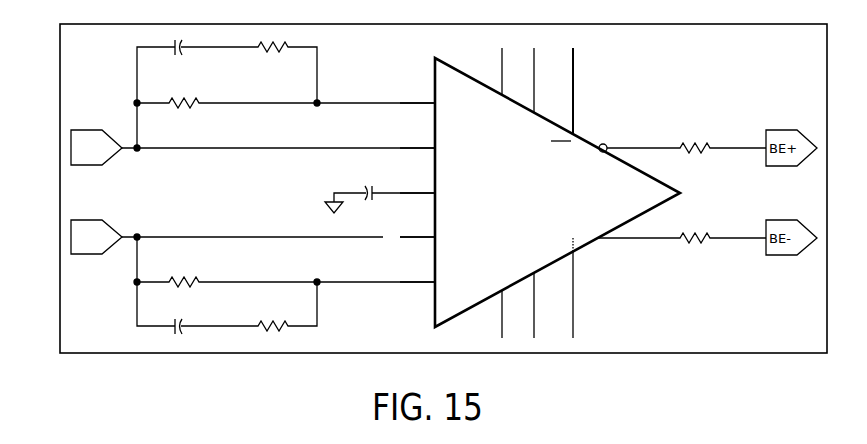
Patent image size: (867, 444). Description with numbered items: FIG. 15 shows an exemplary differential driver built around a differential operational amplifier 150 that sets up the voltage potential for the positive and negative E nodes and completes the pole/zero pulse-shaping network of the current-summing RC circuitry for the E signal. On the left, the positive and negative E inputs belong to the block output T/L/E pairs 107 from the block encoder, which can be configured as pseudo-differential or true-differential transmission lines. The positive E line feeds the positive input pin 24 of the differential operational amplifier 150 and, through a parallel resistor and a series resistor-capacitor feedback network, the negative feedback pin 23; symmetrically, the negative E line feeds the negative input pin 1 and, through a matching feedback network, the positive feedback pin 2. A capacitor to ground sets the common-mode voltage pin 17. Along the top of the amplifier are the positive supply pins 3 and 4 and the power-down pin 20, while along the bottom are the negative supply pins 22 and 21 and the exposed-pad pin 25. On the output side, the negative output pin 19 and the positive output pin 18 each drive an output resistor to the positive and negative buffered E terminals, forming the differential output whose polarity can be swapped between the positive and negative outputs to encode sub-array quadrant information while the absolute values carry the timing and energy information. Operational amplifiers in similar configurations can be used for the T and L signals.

The block output T/L/E pairs 107 is at (70, 150).
The differential operational amplifier 150 is at (523, 227).
The -FB pin 23 is at (417, 93).
The +IN pin 24 is at (417, 138).
The VCM pin 17 is at (417, 183).
The -IN pin 1 is at (417, 227).
The +FB pin 2 is at (417, 272).
The +Vs pin 3 is at (495, 71).
The +Vs pin 4 is at (527, 80).
The PD pin 20 is at (560, 91).
The -Vs pin 22 is at (490, 314).
The -Vs pin 21 is at (523, 305).
The EP pin 25 is at (561, 288).
The -OUT pin 19 is at (638, 139).
The +OUT pin 18 is at (637, 249).